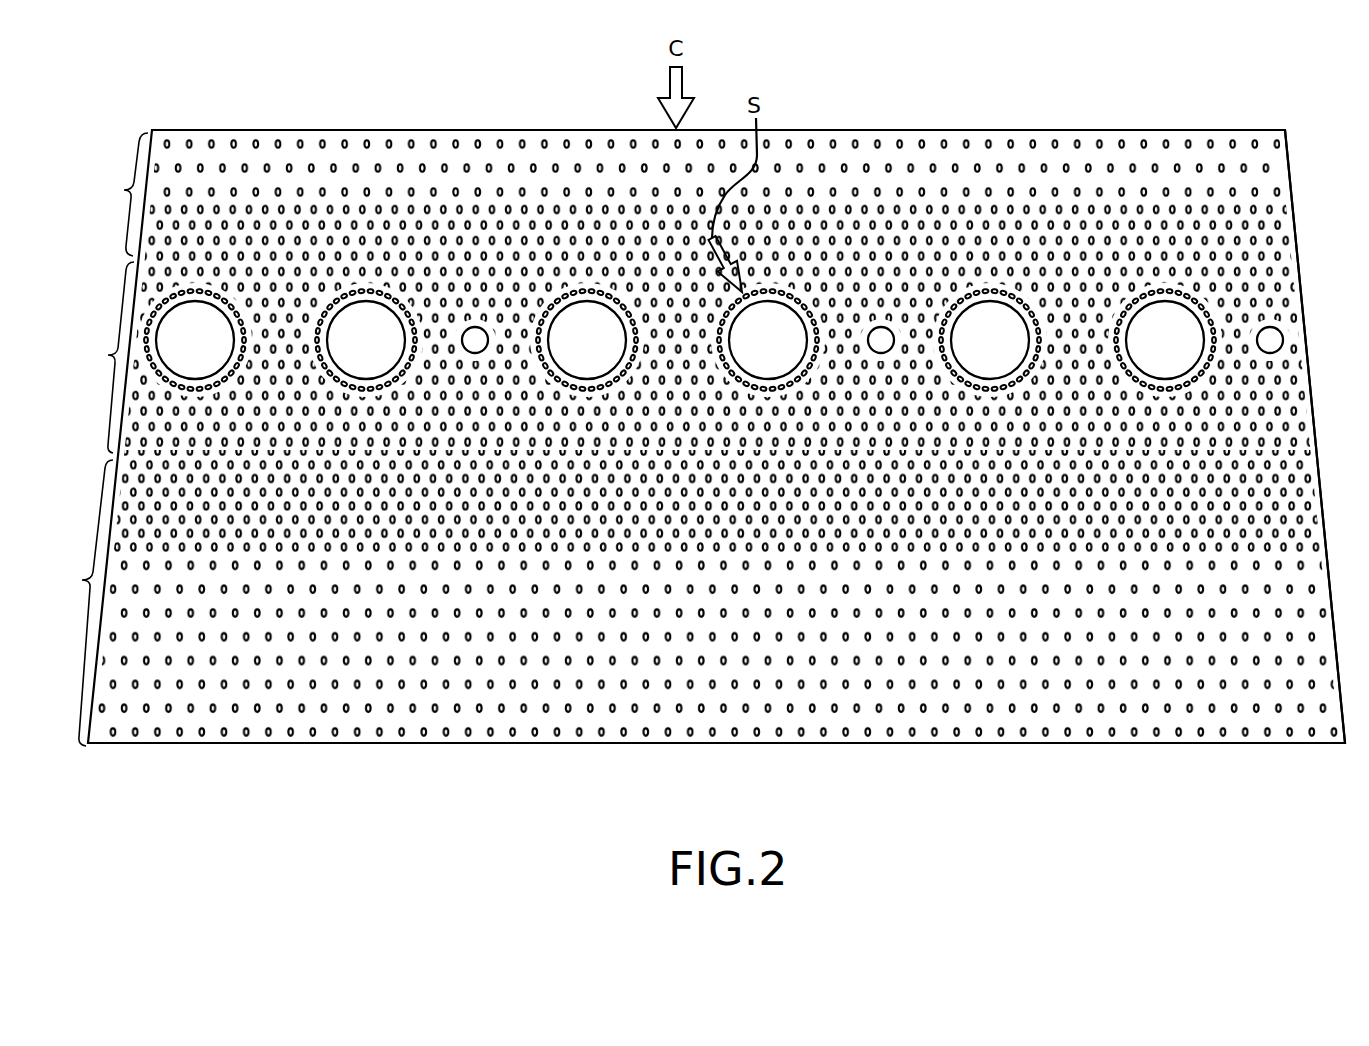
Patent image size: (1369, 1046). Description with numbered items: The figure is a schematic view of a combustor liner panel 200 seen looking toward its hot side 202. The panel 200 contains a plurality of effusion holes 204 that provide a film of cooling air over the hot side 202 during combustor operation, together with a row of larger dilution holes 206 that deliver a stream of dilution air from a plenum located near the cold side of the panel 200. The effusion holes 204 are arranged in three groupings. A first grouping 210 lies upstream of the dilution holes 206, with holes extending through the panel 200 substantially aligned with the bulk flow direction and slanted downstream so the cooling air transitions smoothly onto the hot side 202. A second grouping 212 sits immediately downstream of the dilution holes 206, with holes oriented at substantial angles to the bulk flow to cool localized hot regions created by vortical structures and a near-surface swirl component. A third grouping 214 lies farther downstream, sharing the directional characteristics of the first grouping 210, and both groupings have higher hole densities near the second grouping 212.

The panel 200 is at (218, 108).
The hot side 202 is at (374, 152).
The effusion holes 204 is at (1280, 192).
The dilution holes 206 is at (753, 353).
The first grouping 210 is at (714, 197).
The second grouping 212 is at (707, 357).
The third grouping 214 is at (694, 598).